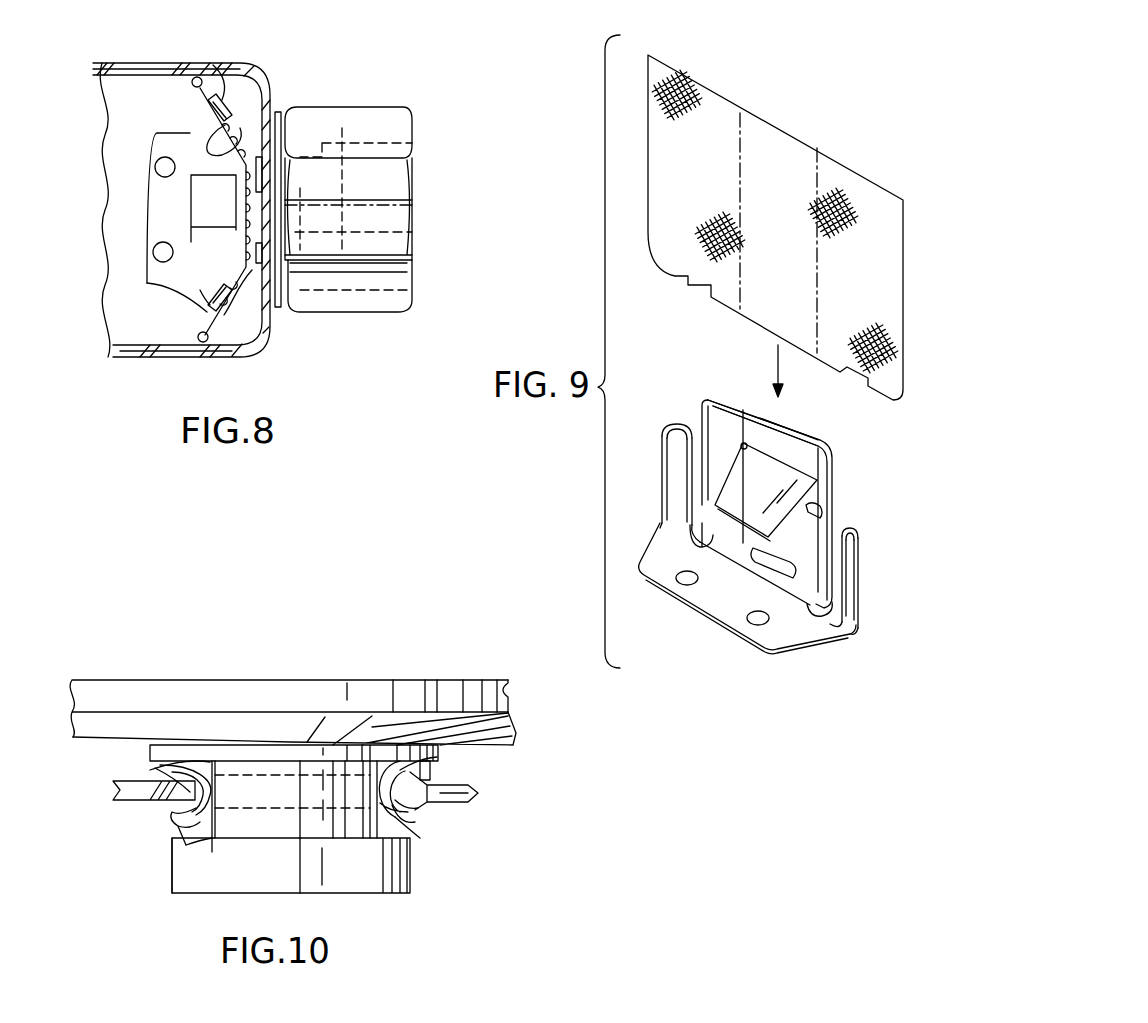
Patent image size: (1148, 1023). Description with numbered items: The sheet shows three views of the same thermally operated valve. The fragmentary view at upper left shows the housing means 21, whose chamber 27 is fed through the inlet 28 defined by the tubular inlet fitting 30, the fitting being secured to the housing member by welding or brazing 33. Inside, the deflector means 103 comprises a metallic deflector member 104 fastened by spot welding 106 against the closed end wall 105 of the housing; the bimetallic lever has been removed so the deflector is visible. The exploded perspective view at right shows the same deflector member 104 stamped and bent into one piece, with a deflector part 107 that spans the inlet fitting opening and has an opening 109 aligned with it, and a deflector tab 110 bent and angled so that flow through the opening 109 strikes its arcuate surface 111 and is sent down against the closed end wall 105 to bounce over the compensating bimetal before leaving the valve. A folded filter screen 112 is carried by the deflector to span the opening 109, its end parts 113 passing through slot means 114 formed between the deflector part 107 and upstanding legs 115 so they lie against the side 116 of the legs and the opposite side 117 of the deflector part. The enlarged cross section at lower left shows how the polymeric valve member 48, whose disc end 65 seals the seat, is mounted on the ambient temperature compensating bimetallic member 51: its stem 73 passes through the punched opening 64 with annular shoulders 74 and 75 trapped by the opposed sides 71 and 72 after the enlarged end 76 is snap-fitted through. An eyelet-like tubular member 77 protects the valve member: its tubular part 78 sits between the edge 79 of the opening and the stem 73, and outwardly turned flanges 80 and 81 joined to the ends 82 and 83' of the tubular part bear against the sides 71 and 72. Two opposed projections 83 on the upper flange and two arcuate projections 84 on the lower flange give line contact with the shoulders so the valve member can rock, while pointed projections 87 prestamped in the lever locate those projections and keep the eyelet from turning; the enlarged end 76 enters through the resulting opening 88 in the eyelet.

In FIG. 8, the housing means 21 is at (131, 358).
In FIG. 8, the chamber 27 is at (145, 349).
In FIG. 8, the inlet 28 is at (327, 164).
In FIG. 8, the tubular inlet fitting 30 is at (347, 315).
In FIG. 8, the welding or brazing 33 is at (280, 115).
In FIG. 10, the valve member 48 is at (159, 680).
In FIG. 10, the ambient temperature compensating bimetallic member 51 is at (470, 803).
In FIG. 10, the opening 64 is at (291, 865).
In FIG. 10, the disc end 65 is at (505, 695).
In FIG. 10, the side of the bimetallic lever means 71 is at (460, 776).
In FIG. 10, the side of the bimetallic lever means 72 is at (442, 803).
In FIG. 10, the stem 73 is at (317, 825).
In FIG. 10, the annular shoulder 74 is at (237, 763).
In FIG. 10, the annular shoulder 75 is at (178, 833).
In FIG. 10, the enlarged end 76 is at (180, 878).
In FIG. 10, the tubular member 77 is at (398, 762).
In FIG. 10, the tubular part 78 is at (408, 802).
In FIG. 10, the edge of the opening 79 is at (150, 783).
In FIG. 10, the annular flange 80 is at (183, 757).
In FIG. 10, the annular flange 81 is at (170, 820).
In FIG. 10, the end of the tubular part 82 is at (217, 760).
In FIG. 10, the annular projections 83 is at (284, 716).
In FIG. 10, the end of the tubular part 83' is at (221, 868).
In FIG. 10, the arcuate projections 84 is at (185, 845).
In FIG. 10, the pointed projections 87 is at (150, 770).
In FIG. 10, the opening 88 is at (215, 795).
In FIG. 8, the deflector means 103 is at (191, 148).
In FIG. 8, the deflector member 104 is at (177, 111).
In FIG. 9, the deflector member 104 is at (714, 394).
In FIG. 8, the closed end wall 105 is at (128, 280).
In FIG. 8, the spot welding 106 is at (156, 167).
In FIG. 9, the spot welding 106 is at (688, 584).
In FIG. 9, the deflector part 107 is at (793, 447).
In FIG. 9, the opening 109 is at (822, 514).
In FIG. 8, the deflector tab 110 is at (207, 205).
In FIG. 9, the deflector tab 110 is at (745, 478).
In FIG. 9, the arcuate surface 111 is at (752, 512).
In FIG. 8, the filter screen 112 is at (246, 277).
In FIG. 9, the filter screen 112 is at (800, 140).
In FIG. 8, the end parts 113 is at (203, 78).
In FIG. 9, the end parts 113 is at (700, 100).
In FIG. 8, the slot means 114 is at (230, 108).
In FIG. 9, the slot means 114 is at (690, 462).
In FIG. 8, the upstanding legs 115 is at (240, 130).
In FIG. 9, the upstanding legs 115 is at (667, 438).
In FIG. 8, the side of the legs 116 is at (210, 95).
In FIG. 9, the side of the legs 116 is at (673, 480).
In FIG. 8, the opposite side of the deflector portion 117 is at (257, 215).
In FIG. 9, the opposite side of the deflector portion 117 is at (793, 417).